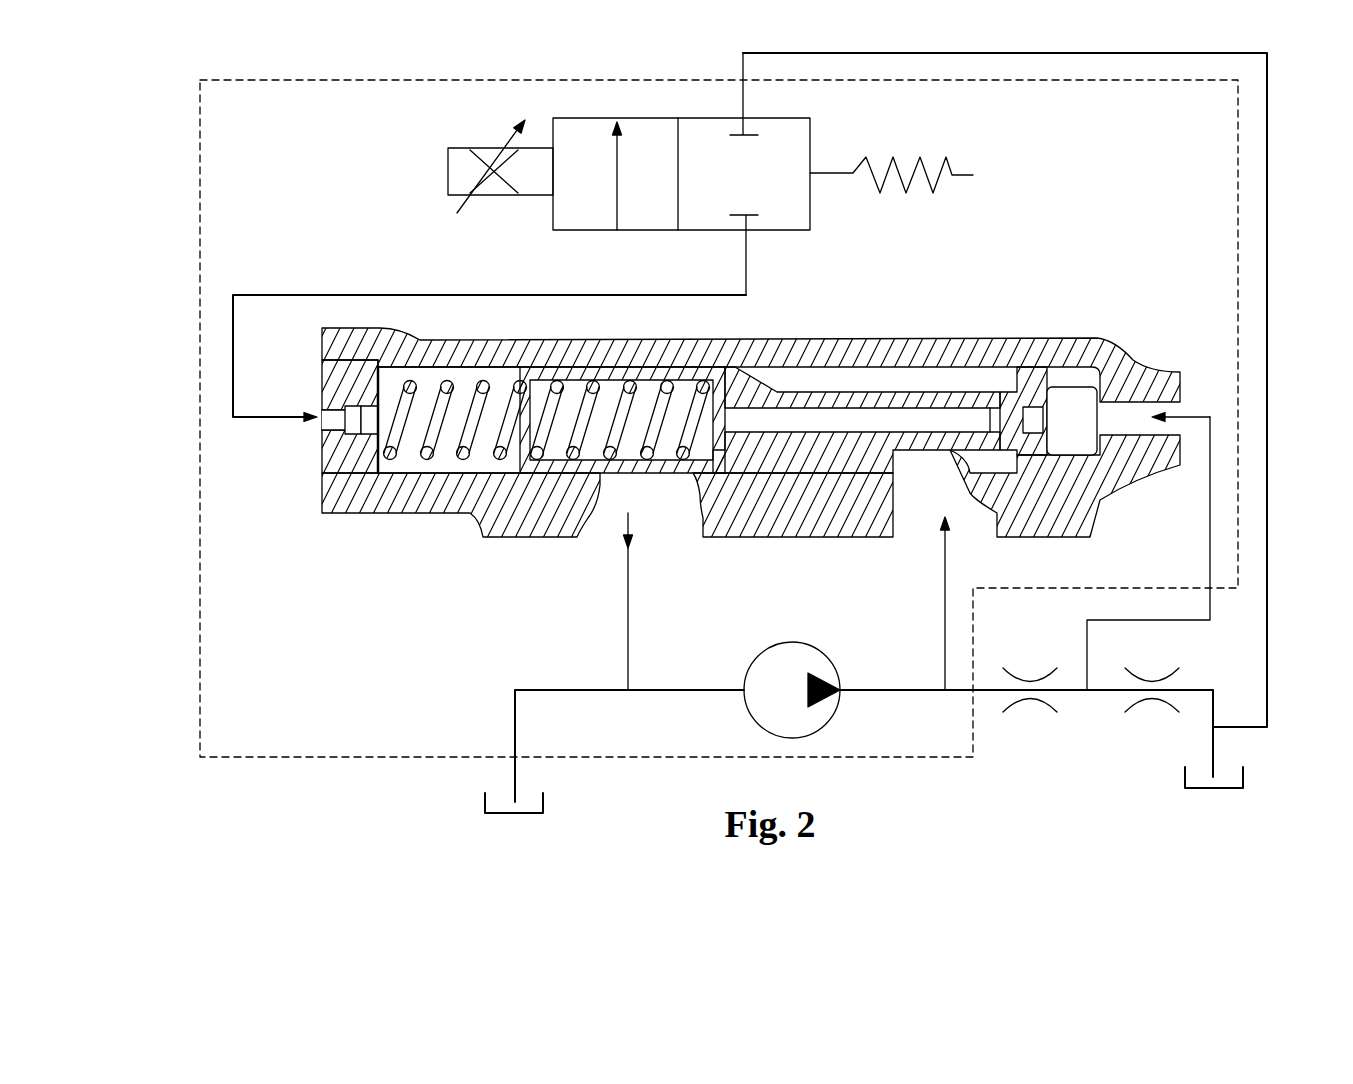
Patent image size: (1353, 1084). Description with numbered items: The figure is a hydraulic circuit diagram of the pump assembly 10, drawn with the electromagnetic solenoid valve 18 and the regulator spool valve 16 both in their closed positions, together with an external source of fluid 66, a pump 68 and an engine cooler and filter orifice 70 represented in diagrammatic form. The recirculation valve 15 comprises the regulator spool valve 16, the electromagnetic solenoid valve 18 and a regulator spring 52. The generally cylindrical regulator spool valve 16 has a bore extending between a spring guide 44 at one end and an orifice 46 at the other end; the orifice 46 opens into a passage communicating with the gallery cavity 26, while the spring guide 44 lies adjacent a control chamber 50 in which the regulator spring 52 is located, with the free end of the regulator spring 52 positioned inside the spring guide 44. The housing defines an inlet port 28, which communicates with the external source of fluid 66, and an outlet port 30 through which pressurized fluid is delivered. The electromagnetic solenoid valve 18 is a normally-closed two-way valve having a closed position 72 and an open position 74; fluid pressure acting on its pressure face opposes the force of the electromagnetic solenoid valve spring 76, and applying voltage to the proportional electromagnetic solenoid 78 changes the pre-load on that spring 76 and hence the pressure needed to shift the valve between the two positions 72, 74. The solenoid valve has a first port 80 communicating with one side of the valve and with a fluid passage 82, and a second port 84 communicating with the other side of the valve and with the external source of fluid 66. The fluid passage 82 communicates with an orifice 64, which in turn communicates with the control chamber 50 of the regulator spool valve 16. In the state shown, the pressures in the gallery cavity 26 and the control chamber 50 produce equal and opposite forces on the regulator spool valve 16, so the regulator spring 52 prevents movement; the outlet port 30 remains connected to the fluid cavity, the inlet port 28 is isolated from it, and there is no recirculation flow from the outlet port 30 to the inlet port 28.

The pump assembly 10 is at (315, 80).
The recirculation valve 15 is at (887, 270).
The regulator spool valve 16 is at (905, 395).
The electromagnetic solenoid valve 18 is at (420, 170).
The gallery cavity 26 is at (1125, 390).
The inlet port 28 is at (655, 510).
The outlet port 30 is at (955, 508).
The spring guide 44 is at (560, 465).
The orifice 46 is at (1020, 400).
The control chamber 50 is at (390, 460).
The regulator spring 52 is at (435, 455).
The orifice 64 is at (320, 432).
The external source of fluid 66 is at (545, 802).
The pump 68 is at (810, 643).
The engine cooler and filter orifice 70 is at (1030, 697).
The closed position 72 is at (677, 178).
The open position 74 is at (583, 242).
The electromagnetic solenoid valve spring 76 is at (953, 168).
The proportional electromagnetic solenoid 78 is at (493, 195).
The first port 80 is at (726, 255).
The fluid passage 82 is at (323, 425).
The second port 84 is at (726, 94).